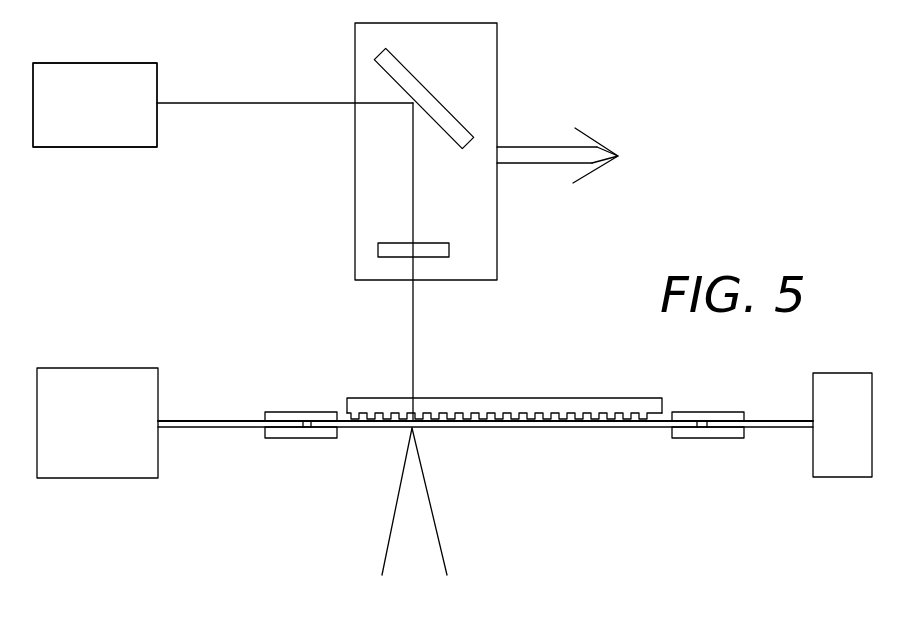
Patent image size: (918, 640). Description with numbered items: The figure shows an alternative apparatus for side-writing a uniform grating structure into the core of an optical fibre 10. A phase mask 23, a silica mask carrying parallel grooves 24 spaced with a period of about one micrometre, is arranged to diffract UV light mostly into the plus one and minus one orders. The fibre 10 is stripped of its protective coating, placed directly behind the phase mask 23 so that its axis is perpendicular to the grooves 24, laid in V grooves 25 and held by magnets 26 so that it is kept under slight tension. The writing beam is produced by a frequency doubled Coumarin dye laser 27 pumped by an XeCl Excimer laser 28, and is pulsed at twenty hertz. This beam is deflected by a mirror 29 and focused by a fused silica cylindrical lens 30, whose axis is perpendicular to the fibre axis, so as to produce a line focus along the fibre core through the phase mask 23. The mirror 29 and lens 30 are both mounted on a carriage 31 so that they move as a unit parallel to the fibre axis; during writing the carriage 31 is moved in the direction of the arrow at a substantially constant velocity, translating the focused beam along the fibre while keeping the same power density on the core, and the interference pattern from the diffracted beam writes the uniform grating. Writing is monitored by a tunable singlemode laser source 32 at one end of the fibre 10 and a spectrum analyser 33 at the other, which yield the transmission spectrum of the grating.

The optical fibre 10 is at (607, 429).
The phase mask 23 is at (550, 402).
The grooves 24 is at (463, 412).
The V grooves 25 is at (295, 410).
The magnets 26 is at (305, 445).
The frequency doubled Coumarin dye laser 27 is at (82, 119).
The XeCl Excimer laser 28 is at (146, 119).
The mirror 29 is at (413, 79).
The fused silica cylindrical lens 30 is at (390, 258).
The carriage 31 is at (502, 87).
The source 32 is at (127, 440).
The spectrum analyser 33 is at (863, 440).